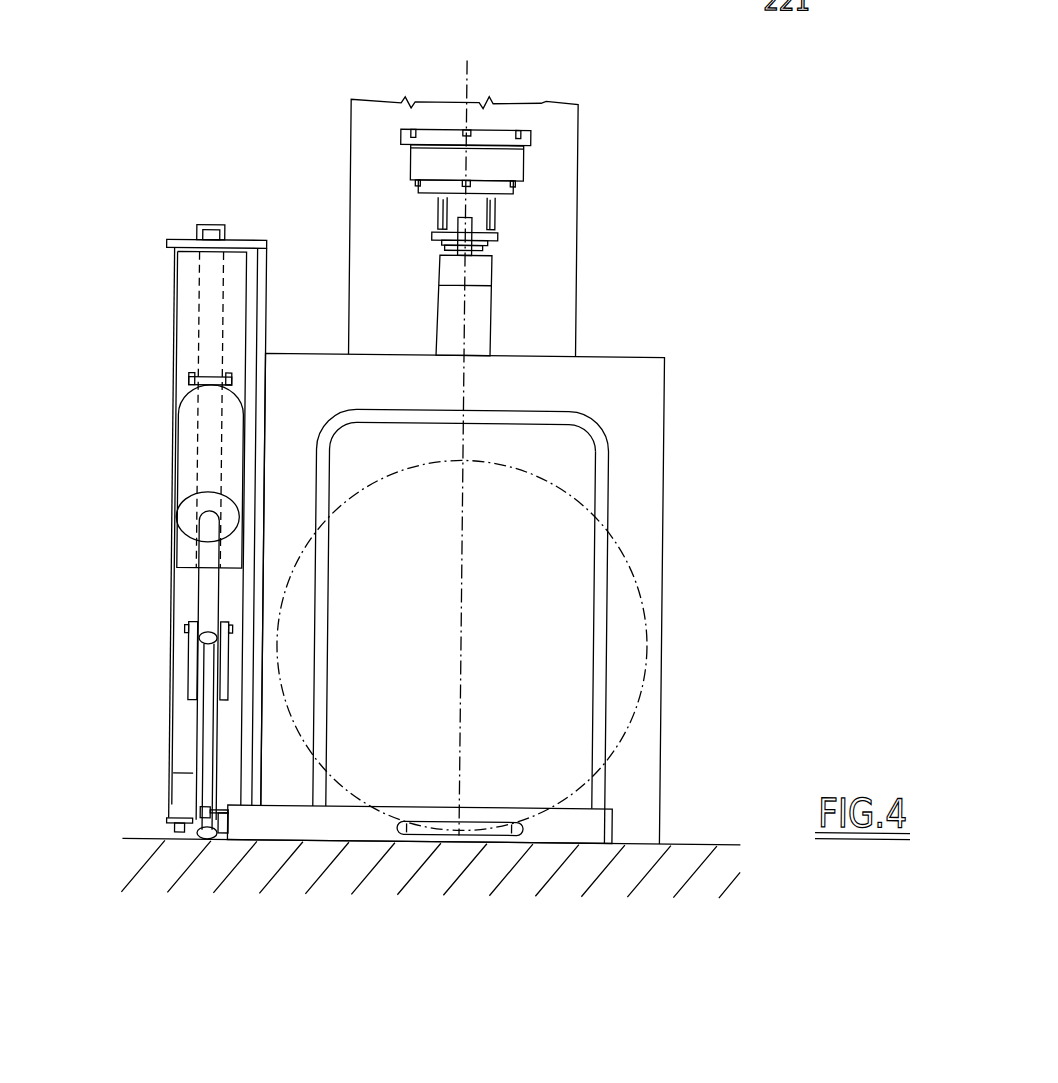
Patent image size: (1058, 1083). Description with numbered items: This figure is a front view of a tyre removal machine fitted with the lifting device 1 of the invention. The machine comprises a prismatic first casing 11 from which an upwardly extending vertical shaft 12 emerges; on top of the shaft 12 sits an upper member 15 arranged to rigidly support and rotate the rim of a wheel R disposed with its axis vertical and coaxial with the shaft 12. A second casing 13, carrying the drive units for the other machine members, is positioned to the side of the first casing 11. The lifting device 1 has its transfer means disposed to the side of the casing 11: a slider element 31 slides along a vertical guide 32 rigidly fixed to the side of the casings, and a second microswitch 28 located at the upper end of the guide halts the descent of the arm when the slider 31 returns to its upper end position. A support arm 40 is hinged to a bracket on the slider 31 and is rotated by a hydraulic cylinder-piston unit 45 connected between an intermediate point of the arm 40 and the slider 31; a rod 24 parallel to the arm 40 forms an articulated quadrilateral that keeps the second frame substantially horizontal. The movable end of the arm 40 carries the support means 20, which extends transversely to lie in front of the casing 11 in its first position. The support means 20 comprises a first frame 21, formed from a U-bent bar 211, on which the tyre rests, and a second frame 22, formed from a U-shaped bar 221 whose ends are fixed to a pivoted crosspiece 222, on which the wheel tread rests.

The lifting device 1 is at (152, 260).
The first casing 11 is at (662, 419).
The vertical shaft 12 is at (486, 310).
The second casing 13 is at (373, 96).
The upper member 15 is at (528, 162).
The support means 20 is at (490, 852).
The first frame 21 is at (610, 486).
The U-bent bar 211 is at (612, 670).
The second frame 22 is at (398, 822).
The U-shaped bar 221 is at (530, 825).
The crosspiece 222 is at (602, 833).
The rod 24 is at (209, 727).
The second microswitch 28 is at (209, 224).
The slider element 31 is at (172, 361).
The vertical guide 32 is at (196, 330).
The support arm 40 is at (176, 776).
The hydraulic cylinder-piston unit 45 is at (183, 460).
The wheel R is at (643, 596).